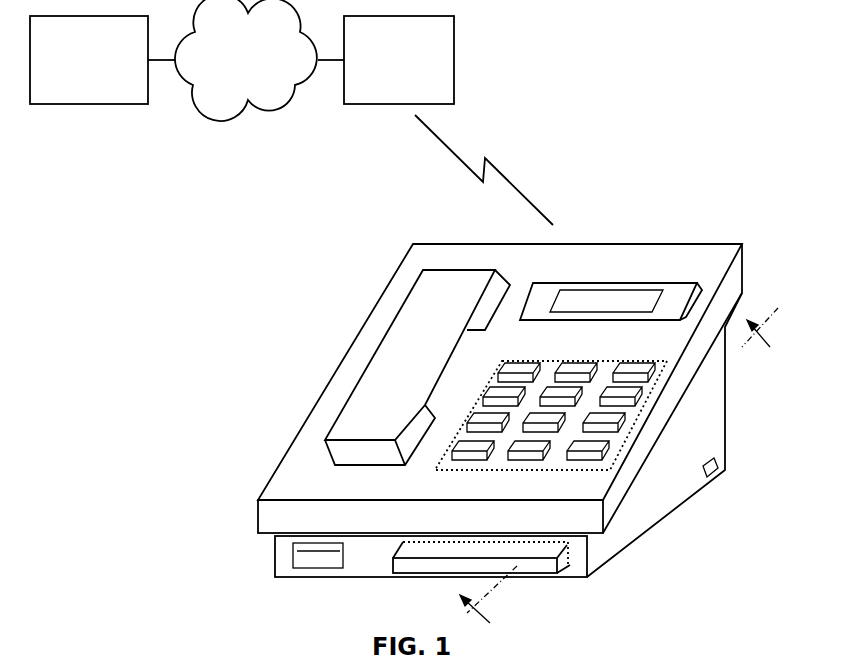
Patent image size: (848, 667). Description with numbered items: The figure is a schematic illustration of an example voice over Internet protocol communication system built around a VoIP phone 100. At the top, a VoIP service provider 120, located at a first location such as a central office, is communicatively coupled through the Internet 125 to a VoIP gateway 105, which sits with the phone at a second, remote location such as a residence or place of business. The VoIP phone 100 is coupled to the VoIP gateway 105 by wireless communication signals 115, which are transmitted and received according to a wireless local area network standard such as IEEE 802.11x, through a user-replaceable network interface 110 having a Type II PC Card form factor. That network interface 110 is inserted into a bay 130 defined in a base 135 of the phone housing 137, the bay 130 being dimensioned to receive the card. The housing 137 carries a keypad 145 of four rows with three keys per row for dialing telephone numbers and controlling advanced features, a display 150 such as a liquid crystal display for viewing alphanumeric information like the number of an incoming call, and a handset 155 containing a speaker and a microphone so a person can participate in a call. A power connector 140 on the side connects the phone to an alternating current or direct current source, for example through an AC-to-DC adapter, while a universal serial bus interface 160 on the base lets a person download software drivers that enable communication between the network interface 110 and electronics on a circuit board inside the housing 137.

The VoIP phone 100 is at (521, 423).
The VoIP gateway 105 is at (384, 80).
The user-replaceable network interface 110 is at (483, 579).
The wireless communication signal 115 is at (505, 170).
The VoIP service provider 120 is at (74, 92).
The Internet 125 is at (231, 80).
The bay 130 is at (466, 566).
The base 135 is at (673, 435).
The phone housing 137 is at (500, 356).
The power connector 140 is at (746, 457).
The keypad 145 is at (551, 401).
The display 150 is at (617, 292).
The handset 155 is at (382, 367).
The universal serial bus (USB) interface 160 is at (345, 575).